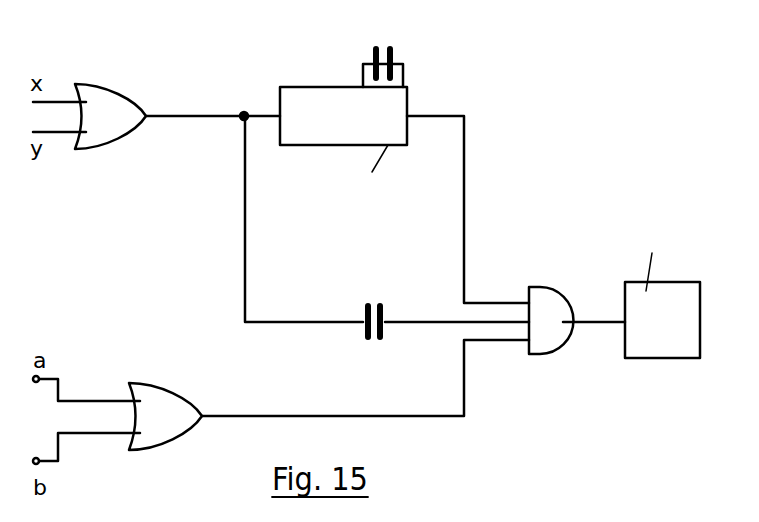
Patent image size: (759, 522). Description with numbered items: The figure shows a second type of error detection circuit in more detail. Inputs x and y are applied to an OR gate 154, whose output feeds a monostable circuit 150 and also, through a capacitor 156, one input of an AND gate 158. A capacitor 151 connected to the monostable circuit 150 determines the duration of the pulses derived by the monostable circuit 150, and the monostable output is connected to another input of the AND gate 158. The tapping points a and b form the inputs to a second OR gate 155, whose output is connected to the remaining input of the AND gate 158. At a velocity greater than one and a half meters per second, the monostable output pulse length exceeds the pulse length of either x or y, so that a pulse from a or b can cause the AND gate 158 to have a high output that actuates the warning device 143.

The OR gate 154 is at (130, 128).
The monostable circuit 150 is at (364, 128).
The capacitor 151 is at (394, 51).
The capacitor 156 is at (365, 311).
The AND gate 158 is at (544, 301).
The warning device 143 is at (681, 332).
The OR gate 155 is at (184, 428).